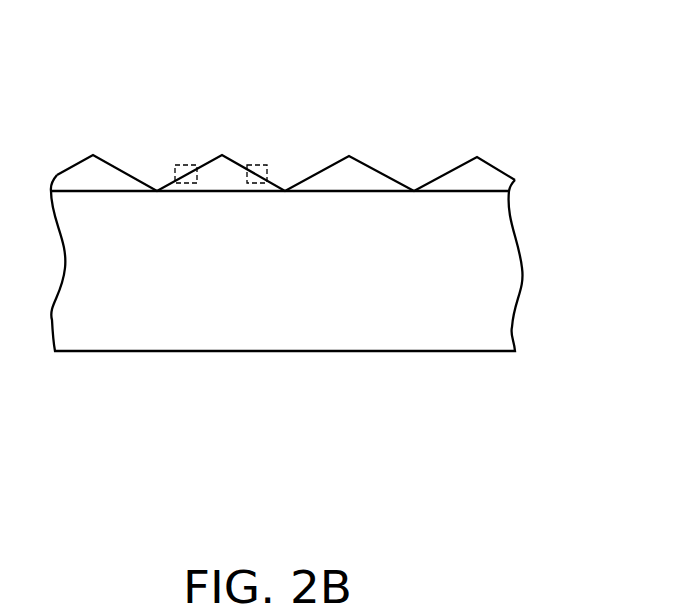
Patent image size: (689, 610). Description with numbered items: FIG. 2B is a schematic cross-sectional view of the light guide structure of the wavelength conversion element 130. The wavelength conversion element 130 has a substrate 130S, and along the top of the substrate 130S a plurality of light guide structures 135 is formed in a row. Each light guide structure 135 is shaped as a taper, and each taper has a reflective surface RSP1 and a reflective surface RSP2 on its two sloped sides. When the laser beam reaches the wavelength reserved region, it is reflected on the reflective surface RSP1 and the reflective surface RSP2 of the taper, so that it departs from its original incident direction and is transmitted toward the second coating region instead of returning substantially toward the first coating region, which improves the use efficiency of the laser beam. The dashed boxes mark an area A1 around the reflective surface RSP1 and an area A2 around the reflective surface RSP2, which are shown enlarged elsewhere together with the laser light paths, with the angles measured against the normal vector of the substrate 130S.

The wavelength conversion element 130 is at (519, 378).
The substrate 130S is at (500, 256).
The light guide structure 135 is at (467, 177).
The reflective surface RSP1 is at (253, 166).
The reflective surface RSP2 is at (188, 166).
The area A1 is at (259, 166).
The area A2 is at (183, 166).